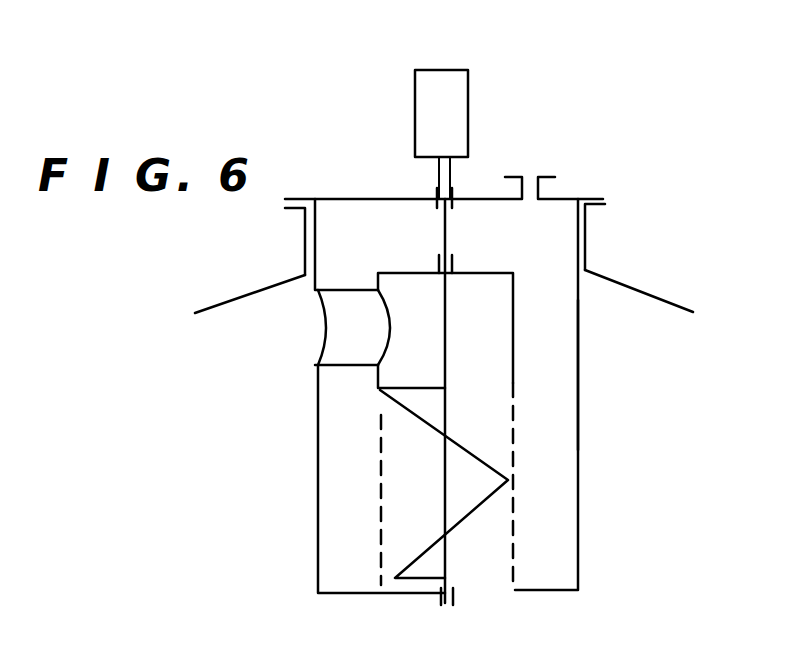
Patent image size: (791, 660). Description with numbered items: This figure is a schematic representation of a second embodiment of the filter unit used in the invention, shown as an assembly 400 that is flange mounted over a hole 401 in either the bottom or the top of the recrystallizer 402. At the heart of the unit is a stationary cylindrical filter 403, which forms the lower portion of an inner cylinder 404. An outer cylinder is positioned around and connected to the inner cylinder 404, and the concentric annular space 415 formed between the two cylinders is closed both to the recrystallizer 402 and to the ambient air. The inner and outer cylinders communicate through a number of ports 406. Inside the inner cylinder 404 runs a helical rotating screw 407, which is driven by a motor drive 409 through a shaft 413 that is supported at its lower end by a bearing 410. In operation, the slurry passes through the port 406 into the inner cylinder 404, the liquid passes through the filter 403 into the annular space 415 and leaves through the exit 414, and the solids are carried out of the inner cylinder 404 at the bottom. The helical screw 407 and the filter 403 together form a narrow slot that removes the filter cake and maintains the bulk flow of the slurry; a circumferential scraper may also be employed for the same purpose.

The outer housing 400 is at (318, 462).
The hole 401 is at (586, 223).
The recrystallizer 402 is at (640, 292).
The stationary cylindrical filter 403 is at (581, 515).
The inner cylinder 404 is at (515, 340).
The ports 406 is at (322, 325).
The helical rotating screw 407 is at (425, 580).
The motor drive 409 is at (470, 85).
The lower bearing 410 is at (455, 596).
The drive shaft 413 is at (452, 172).
The exit 414 is at (535, 170).
The annular chamber 415 is at (555, 432).